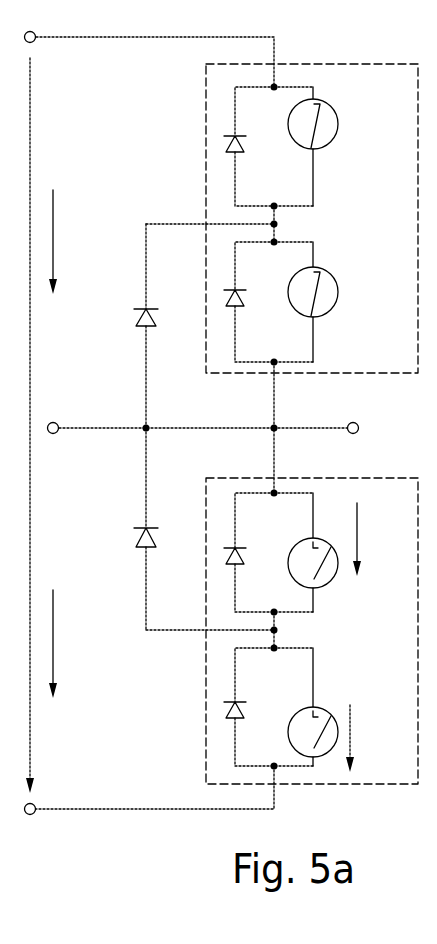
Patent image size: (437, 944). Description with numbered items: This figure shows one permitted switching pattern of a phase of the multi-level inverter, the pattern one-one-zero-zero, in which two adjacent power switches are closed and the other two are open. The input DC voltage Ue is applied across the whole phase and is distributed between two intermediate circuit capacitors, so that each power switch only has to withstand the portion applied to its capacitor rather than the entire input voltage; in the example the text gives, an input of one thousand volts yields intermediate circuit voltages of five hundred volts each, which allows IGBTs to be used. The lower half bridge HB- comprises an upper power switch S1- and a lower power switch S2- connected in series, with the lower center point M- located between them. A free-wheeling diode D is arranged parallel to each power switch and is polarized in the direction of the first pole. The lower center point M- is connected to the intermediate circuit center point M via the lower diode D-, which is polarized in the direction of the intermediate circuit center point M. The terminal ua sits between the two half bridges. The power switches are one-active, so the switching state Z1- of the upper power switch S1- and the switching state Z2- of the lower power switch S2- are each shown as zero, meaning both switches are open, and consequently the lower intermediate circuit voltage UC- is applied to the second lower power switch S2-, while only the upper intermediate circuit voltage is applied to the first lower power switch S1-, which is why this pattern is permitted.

The lower half bridge HB- is at (205, 679).
The free-wheeling diode D is at (244, 426).
The lower diode D- is at (129, 529).
The upper power switch of the lower half bridge S1- is at (301, 552).
The lower power switch of the lower half bridge S2- is at (299, 707).
The switching state of the upper power switch of the lower half bridge Z1- is at (358, 581).
The switching state of the lower power switch of the lower half bridge Z2- is at (358, 711).
The lower center point M- is at (228, 632).
The intermediate circuit center point M is at (163, 415).
The output voltage terminal ua is at (333, 431).
The input DC voltage Ue is at (44, 425).
The lower intermediate circuit voltage UC- is at (222, 681).